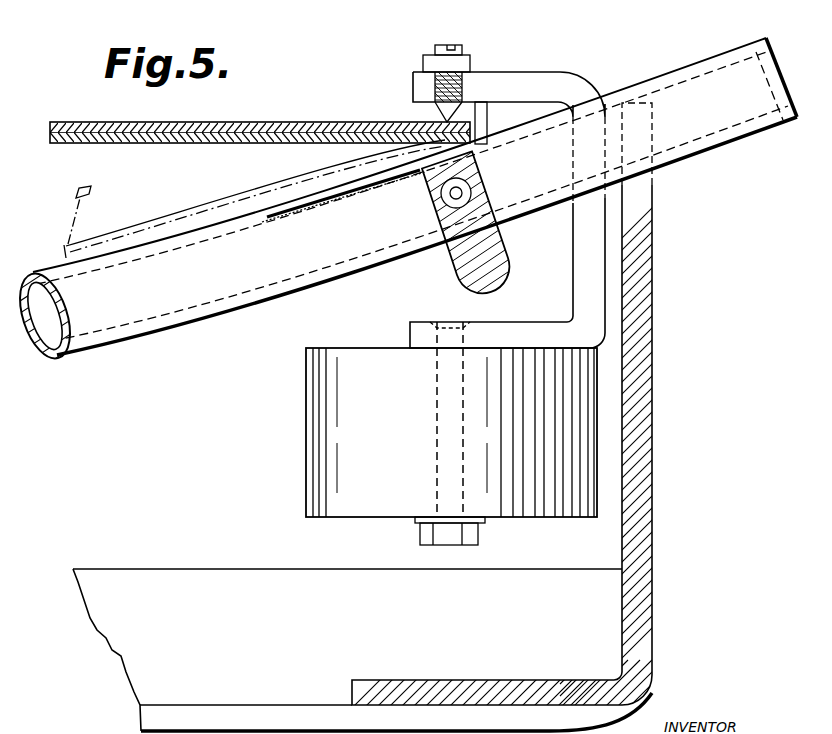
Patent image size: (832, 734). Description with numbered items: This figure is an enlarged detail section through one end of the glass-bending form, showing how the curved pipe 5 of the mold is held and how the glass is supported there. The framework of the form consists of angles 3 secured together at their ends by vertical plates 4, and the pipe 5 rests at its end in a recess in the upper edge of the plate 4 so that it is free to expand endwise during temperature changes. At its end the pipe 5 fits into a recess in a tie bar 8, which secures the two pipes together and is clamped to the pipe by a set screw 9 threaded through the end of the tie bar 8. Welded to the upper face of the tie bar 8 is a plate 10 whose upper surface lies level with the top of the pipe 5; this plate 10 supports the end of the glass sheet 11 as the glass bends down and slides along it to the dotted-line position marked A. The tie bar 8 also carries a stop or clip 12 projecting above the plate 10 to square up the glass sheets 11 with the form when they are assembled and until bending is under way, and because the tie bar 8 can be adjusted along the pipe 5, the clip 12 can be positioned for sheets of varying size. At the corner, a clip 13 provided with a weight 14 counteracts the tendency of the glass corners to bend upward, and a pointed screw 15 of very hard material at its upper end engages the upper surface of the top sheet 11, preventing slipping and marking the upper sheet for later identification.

The angles 3 is at (178, 588).
The vertical plates 4 is at (643, 318).
The pipes 5 is at (218, 295).
The tie bars 8 is at (495, 258).
The set screws 9 is at (440, 212).
The plates 10 is at (314, 203).
The glass sheets 11 is at (243, 123).
The stops or clips 12 is at (478, 125).
The clips 13 is at (550, 80).
The weights 14 is at (581, 445).
The pointed screws 15 is at (458, 50).